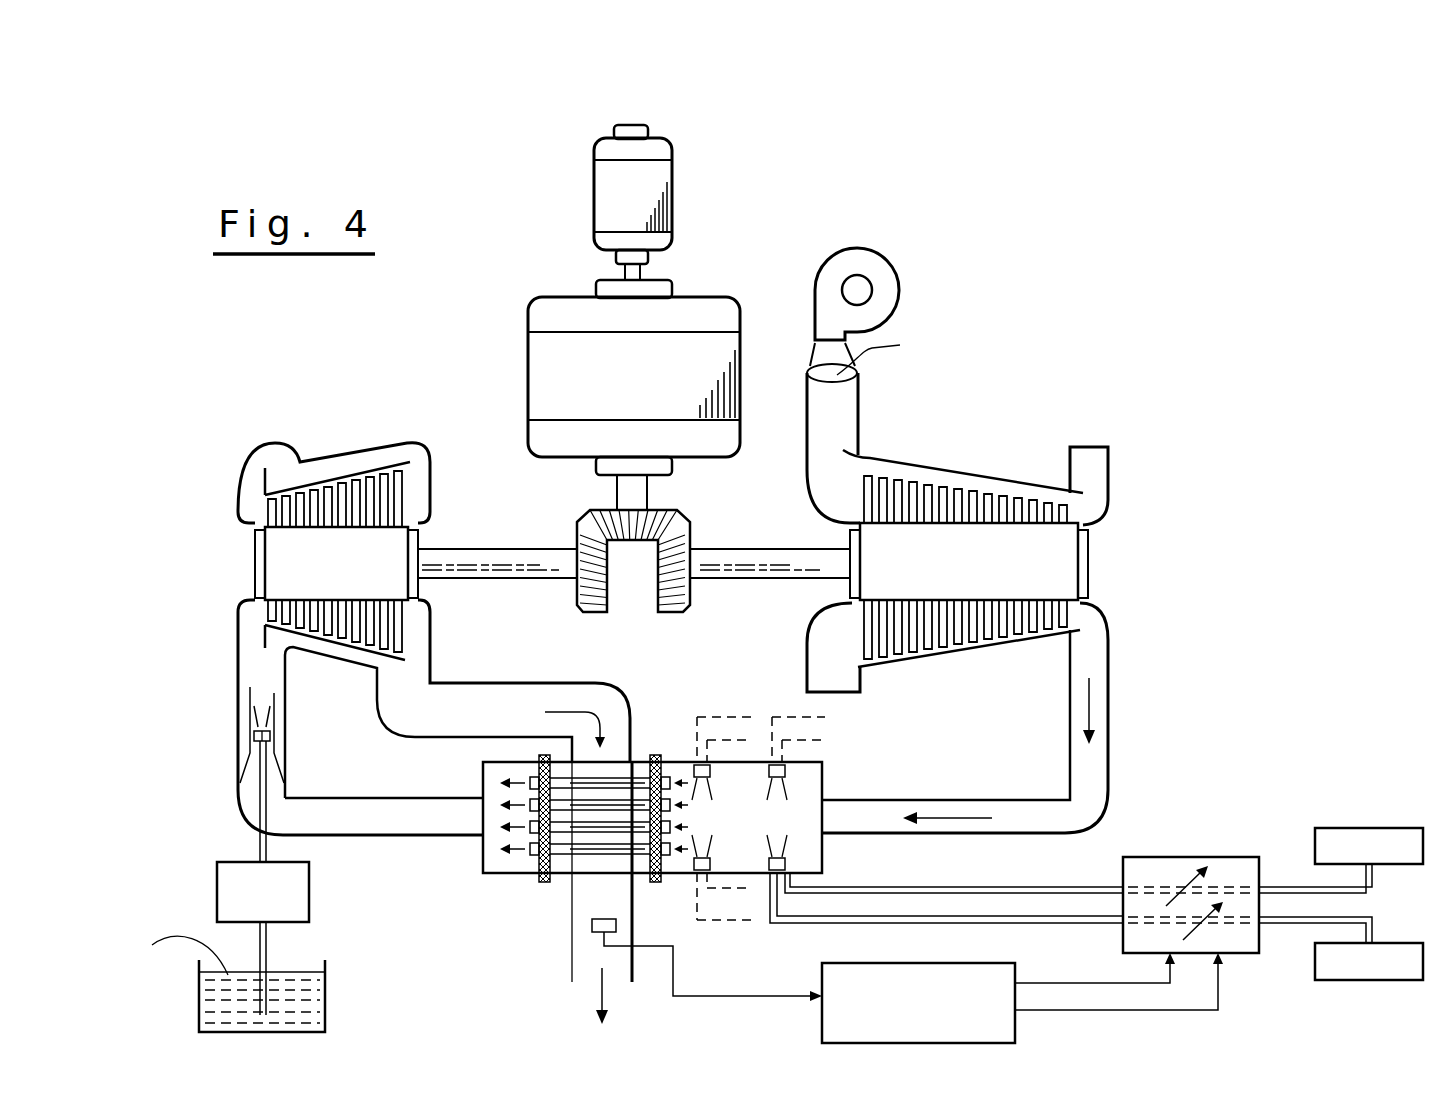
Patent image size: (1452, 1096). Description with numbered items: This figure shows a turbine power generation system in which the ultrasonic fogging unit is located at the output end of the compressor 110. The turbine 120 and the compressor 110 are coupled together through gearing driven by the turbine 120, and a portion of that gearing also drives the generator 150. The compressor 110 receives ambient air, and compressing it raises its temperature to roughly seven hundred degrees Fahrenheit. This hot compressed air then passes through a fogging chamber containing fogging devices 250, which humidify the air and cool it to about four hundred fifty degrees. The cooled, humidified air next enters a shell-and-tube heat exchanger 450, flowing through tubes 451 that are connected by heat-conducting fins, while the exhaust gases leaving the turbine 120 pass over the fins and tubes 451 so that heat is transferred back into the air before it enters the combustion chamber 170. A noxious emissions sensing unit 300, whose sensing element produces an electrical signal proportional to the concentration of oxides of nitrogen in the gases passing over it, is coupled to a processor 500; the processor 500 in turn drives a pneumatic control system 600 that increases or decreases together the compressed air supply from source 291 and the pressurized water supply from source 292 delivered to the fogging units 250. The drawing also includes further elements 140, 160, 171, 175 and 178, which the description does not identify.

The compressor 110 is at (950, 462).
The turbine 120 is at (329, 452).
The starter motor 140 is at (672, 213).
The generator 150 is at (740, 299).
The input air blower 160 is at (872, 262).
The combustion chamber 170 is at (258, 683).
The fuel tank 171 is at (322, 985).
The fuel pump 175 is at (309, 880).
The fuel nozzle 178 is at (255, 741).
The fogging devices 250 is at (805, 775).
The compressed air supply source 291 is at (1315, 830).
The pressurized water supply source 292 is at (1315, 980).
The noxious emissions sensing unit 300 is at (592, 930).
The heat exchanger 450 is at (653, 732).
The tubes 451 is at (602, 853).
The processor 500 is at (1015, 962).
The pneumatic control system 600 is at (1190, 857).